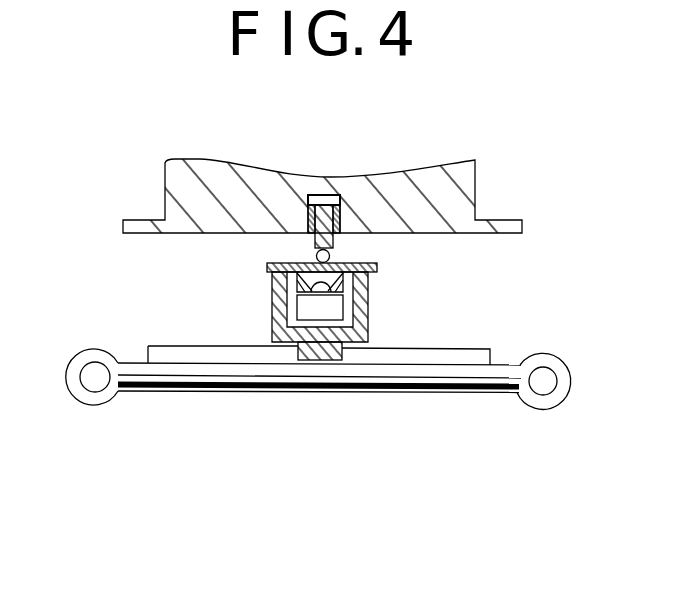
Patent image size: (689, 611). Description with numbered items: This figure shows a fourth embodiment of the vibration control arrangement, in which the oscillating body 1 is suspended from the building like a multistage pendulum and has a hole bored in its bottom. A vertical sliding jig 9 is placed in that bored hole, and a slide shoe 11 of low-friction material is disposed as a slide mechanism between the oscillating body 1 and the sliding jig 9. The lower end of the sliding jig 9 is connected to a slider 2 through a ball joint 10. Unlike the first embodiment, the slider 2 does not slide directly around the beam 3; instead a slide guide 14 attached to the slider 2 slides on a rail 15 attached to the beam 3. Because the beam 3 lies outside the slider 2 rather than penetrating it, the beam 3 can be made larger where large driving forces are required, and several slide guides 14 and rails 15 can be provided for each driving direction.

The oscillating body 1 is at (467, 187).
The slider 2 is at (341, 314).
The beam 3 is at (334, 310).
The sliding jig 9 is at (334, 243).
The ball joint 10 is at (315, 257).
The slide shoe 11 is at (318, 195).
The slide guide 14 is at (300, 282).
The rail 15 is at (368, 287).